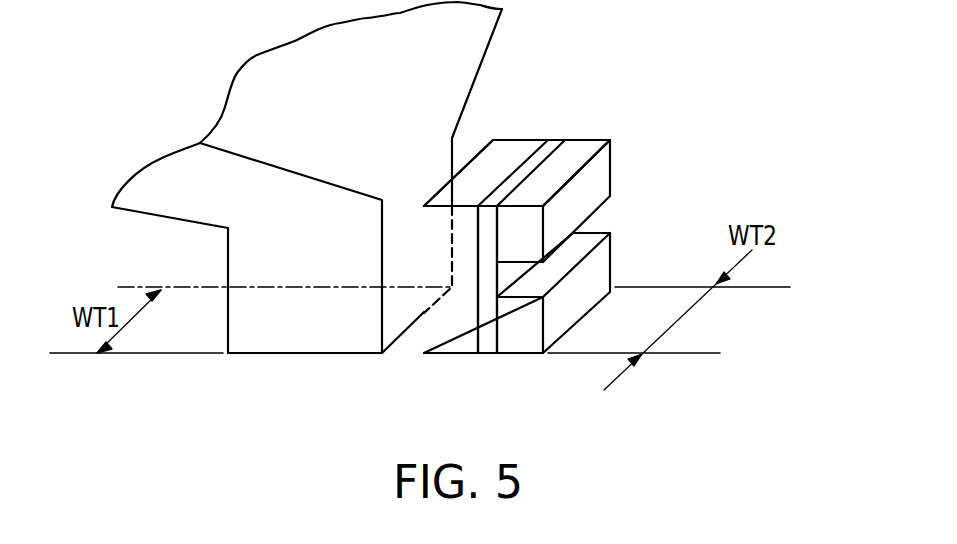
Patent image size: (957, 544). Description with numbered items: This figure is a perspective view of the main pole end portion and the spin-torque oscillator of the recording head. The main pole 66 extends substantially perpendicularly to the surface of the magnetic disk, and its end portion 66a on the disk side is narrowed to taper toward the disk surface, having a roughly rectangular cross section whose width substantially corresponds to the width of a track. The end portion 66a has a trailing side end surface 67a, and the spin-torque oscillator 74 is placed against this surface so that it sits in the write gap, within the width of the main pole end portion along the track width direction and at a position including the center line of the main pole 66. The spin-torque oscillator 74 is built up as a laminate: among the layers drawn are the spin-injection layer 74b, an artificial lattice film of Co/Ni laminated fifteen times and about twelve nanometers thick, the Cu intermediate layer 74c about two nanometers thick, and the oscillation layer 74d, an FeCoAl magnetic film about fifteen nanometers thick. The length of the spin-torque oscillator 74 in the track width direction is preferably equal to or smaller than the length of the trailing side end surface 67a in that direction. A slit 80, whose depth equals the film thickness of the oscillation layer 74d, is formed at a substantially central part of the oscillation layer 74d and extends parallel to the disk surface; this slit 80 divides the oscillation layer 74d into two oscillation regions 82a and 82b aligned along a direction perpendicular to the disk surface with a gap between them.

The main pole 66 is at (257, 82).
The end portion of the main pole 66a is at (283, 342).
The trailing side end surface 67a is at (396, 317).
The spin-torque oscillator 74 is at (551, 101).
The spin-injection layer 74b is at (447, 340).
The intermediate layer 74c is at (488, 335).
The oscillation layer 74d is at (583, 148).
The slit 80 is at (590, 246).
The oscillation region 82a is at (580, 302).
The oscillation region 82b is at (610, 177).